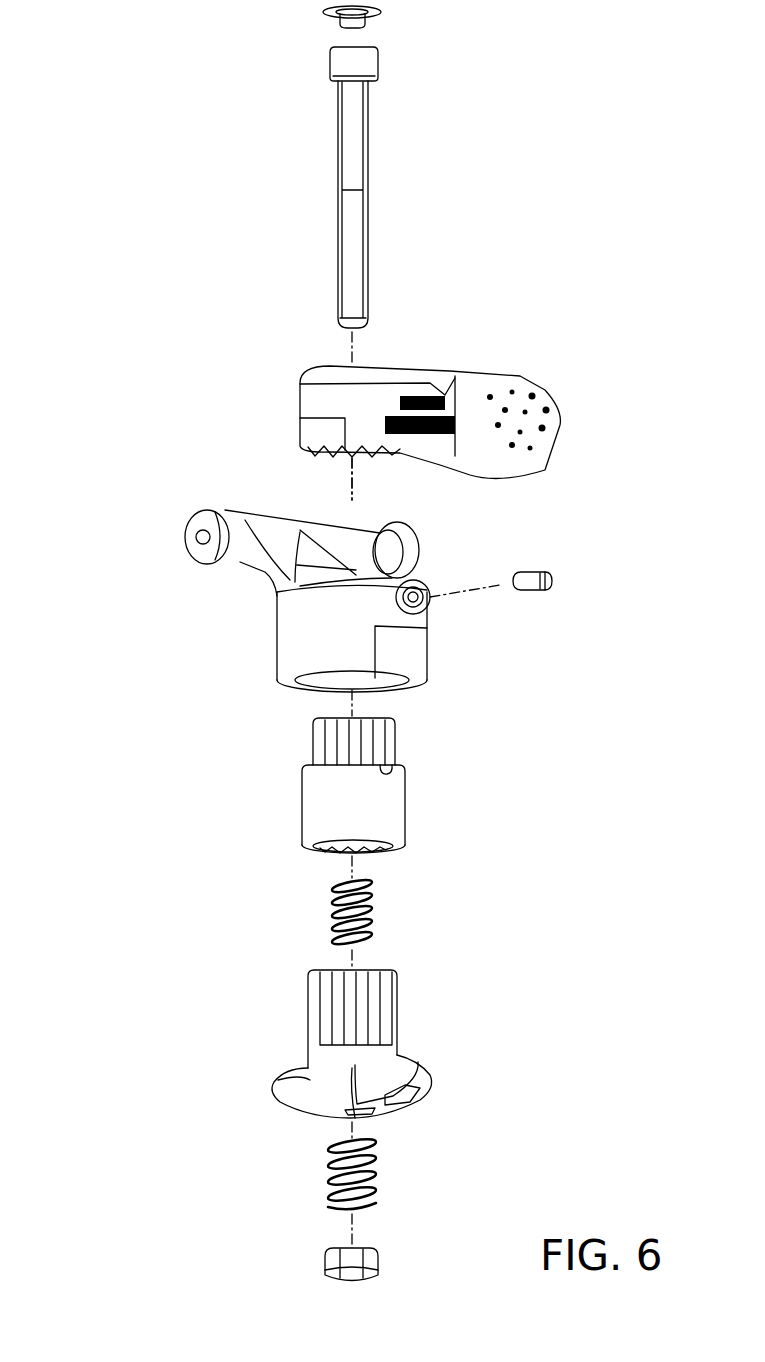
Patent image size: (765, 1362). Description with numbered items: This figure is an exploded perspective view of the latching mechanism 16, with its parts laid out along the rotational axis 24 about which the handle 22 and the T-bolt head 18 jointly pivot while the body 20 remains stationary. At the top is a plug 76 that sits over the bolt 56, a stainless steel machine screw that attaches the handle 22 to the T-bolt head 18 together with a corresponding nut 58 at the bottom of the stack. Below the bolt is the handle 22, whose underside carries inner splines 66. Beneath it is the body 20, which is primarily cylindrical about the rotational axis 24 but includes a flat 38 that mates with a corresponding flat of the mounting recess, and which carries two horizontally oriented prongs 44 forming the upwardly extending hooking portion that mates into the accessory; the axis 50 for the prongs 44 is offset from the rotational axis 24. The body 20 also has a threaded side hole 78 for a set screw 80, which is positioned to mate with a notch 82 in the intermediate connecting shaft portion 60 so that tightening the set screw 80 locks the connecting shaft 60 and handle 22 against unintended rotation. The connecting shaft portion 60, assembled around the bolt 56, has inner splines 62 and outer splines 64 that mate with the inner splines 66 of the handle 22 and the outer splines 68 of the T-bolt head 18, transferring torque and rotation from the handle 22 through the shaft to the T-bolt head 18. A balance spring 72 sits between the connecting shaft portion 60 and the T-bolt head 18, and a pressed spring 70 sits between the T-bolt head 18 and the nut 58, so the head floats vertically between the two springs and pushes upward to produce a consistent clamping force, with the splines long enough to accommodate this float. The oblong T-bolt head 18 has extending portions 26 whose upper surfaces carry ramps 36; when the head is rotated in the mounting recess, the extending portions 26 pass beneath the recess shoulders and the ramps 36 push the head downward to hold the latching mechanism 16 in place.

The latching mechanism 16 is at (248, 290).
The T-bolt head 18 is at (408, 1010).
The body 20 is at (238, 482).
The handle 22 is at (427, 382).
The rotational axis 24 is at (353, 488).
The extending portions 26 is at (414, 1068).
The ramps 36 is at (300, 1076).
The flat 38 is at (405, 656).
The horizontally oriented prongs 44 is at (208, 512).
The axis for the prongs 50 is at (176, 532).
The bolt 56 is at (355, 165).
The nut 58 is at (360, 1258).
The connecting shaft portion 60 is at (426, 799).
The inner splines 62 is at (368, 859).
The outer splines 64 is at (384, 736).
The inner splines of the handle 66 is at (330, 456).
The outer splines of the T-bolt head 68 is at (322, 1003).
The pressed spring 70 is at (372, 1172).
The balance spring 72 is at (372, 920).
The plug 76 is at (381, 7).
The threaded side hole 78 is at (420, 582).
The set screw 80 is at (528, 571).
The notch 82 is at (392, 762).